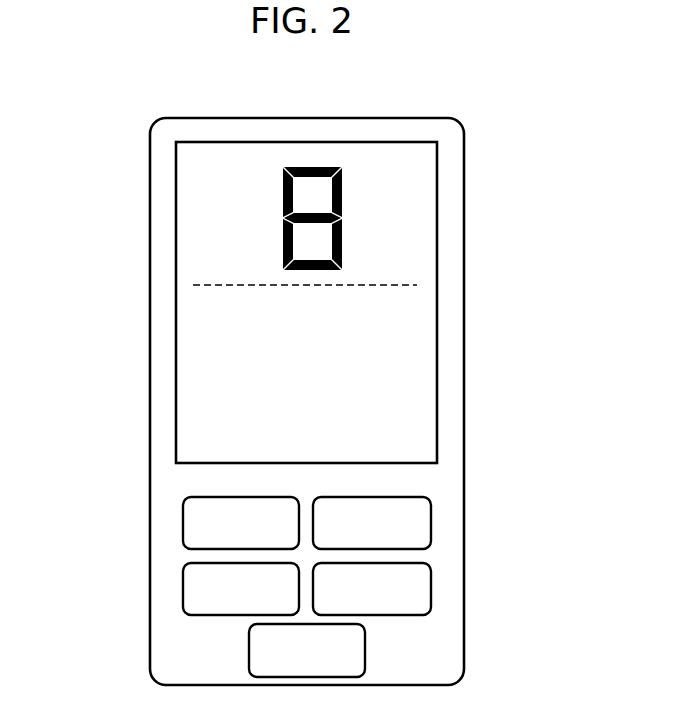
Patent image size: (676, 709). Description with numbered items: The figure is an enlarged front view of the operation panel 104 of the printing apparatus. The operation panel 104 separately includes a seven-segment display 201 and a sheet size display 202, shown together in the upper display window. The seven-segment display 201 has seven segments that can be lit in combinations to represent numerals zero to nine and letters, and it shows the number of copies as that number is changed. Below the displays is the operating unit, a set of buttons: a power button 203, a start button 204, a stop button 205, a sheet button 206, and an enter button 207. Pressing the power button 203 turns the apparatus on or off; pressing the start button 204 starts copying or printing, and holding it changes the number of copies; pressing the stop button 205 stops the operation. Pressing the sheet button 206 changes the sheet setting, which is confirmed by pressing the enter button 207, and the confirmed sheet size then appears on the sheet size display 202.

The operation panel 104 is at (361, 118).
The seven-segment display 201 is at (357, 210).
The sheet size display 202 is at (410, 369).
The power button 203 is at (365, 645).
The start button 204 is at (431, 513).
The stop button 205 is at (431, 579).
The sheet button 206 is at (183, 514).
The enter button 207 is at (183, 580).